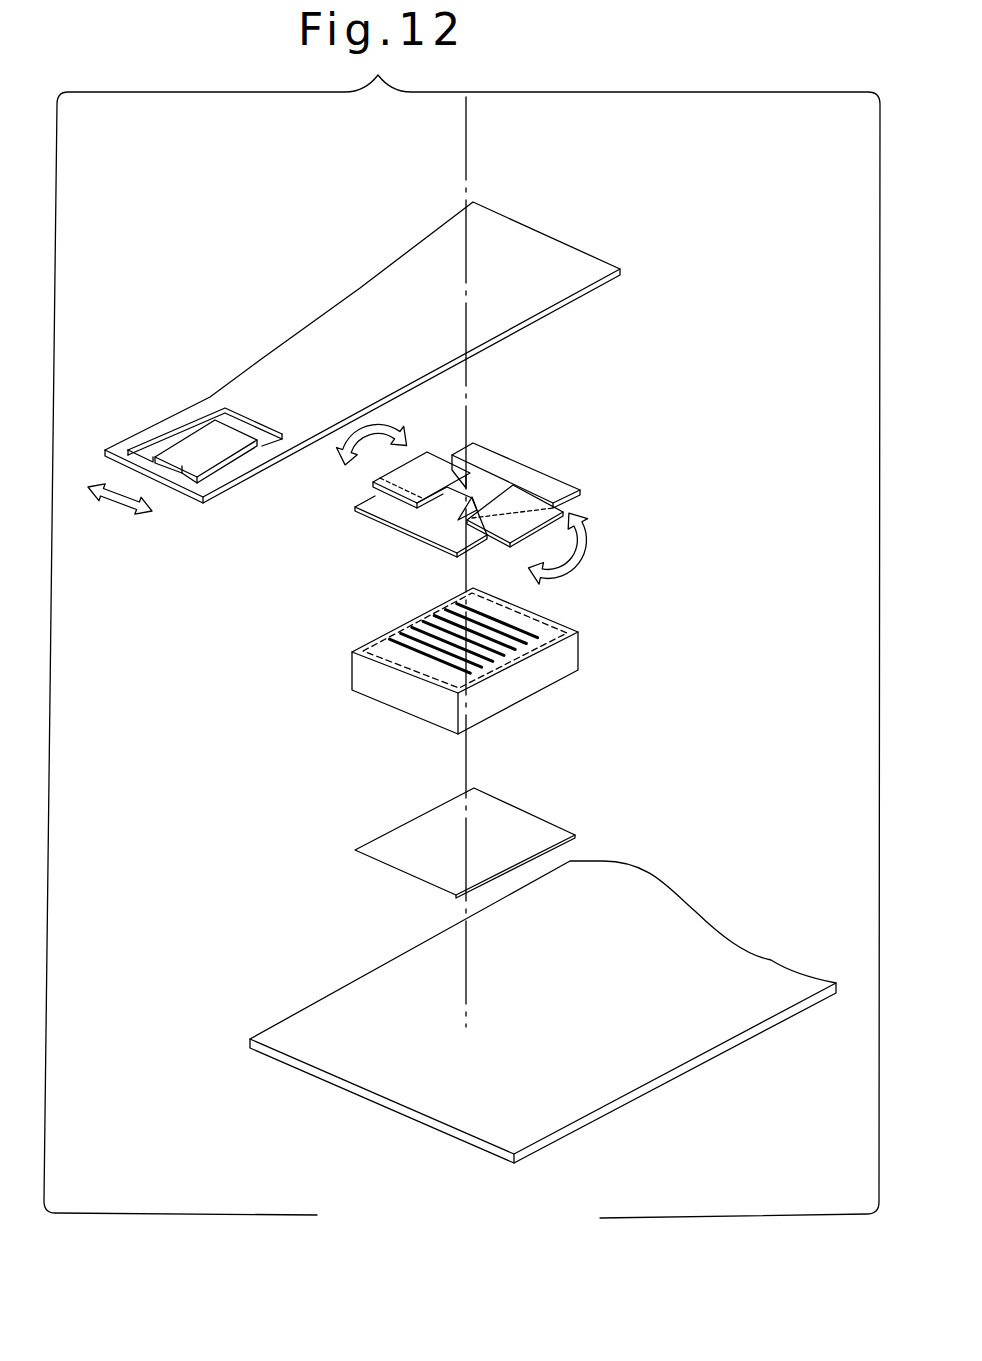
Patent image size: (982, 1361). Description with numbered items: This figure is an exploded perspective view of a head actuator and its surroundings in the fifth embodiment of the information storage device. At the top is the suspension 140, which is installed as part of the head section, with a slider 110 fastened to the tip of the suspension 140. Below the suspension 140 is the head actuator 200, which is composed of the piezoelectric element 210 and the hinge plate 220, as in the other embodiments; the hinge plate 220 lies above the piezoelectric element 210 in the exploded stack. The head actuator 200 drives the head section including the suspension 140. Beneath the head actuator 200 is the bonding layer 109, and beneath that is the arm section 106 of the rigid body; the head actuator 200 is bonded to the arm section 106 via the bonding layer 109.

The arm section 106 is at (310, 1026).
The bonding layer 109 is at (392, 850).
The slider 110 is at (220, 468).
The suspension 140 is at (365, 312).
The head actuator 200 is at (625, 425).
The piezoelectric element 210 is at (382, 687).
The hinge plate 220 is at (408, 517).